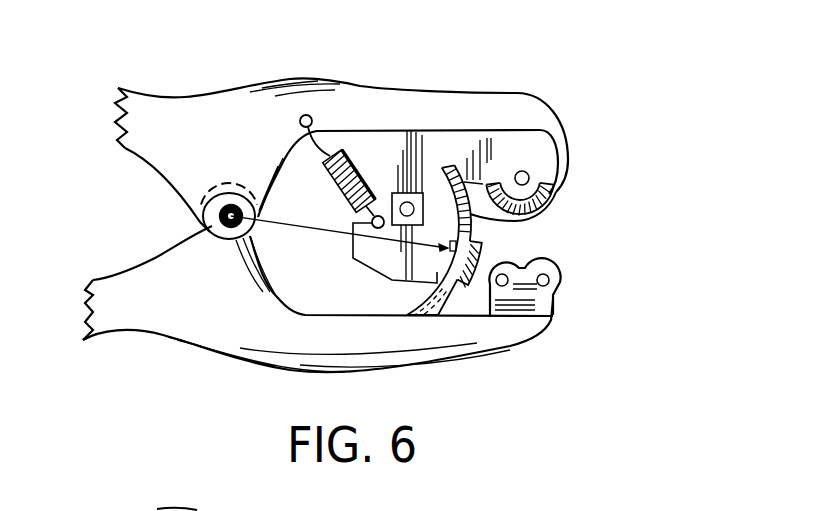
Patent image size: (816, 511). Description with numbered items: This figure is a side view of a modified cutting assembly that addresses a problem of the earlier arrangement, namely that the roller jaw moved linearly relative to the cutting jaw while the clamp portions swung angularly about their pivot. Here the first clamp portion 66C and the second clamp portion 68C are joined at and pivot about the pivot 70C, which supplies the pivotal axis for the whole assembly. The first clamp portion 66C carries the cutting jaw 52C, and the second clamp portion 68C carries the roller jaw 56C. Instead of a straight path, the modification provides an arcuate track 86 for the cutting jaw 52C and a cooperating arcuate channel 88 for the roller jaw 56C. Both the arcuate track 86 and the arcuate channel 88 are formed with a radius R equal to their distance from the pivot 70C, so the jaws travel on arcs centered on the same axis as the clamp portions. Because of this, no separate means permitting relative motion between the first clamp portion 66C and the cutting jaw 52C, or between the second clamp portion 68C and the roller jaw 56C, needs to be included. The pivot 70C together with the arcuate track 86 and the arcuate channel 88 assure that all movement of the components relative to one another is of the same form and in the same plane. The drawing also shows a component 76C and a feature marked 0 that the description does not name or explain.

The cutting jaw 52C is at (457, 144).
The roller jaw 56C is at (561, 291).
The first clamp portion 66C is at (247, 142).
The second clamp portion 68C is at (220, 308).
The pivot 70C is at (185, 237).
The spring 76C is at (360, 133).
The arcuate track 86 is at (553, 214).
The arcuate channel 88 is at (430, 293).
The radius R is at (330, 237).
The reference point 0 is at (537, 235).